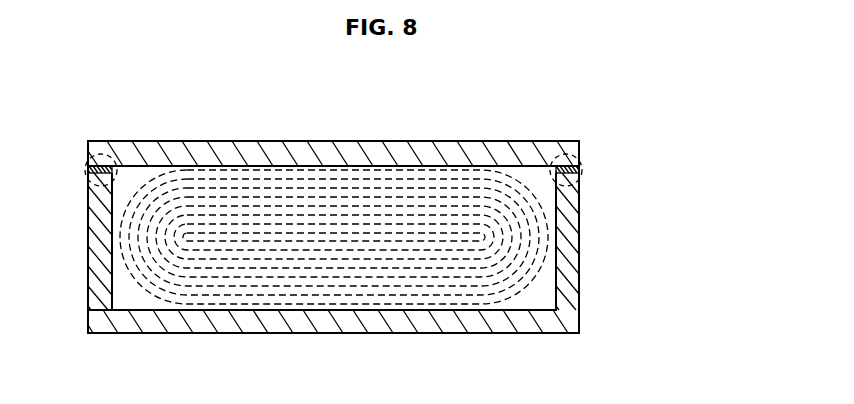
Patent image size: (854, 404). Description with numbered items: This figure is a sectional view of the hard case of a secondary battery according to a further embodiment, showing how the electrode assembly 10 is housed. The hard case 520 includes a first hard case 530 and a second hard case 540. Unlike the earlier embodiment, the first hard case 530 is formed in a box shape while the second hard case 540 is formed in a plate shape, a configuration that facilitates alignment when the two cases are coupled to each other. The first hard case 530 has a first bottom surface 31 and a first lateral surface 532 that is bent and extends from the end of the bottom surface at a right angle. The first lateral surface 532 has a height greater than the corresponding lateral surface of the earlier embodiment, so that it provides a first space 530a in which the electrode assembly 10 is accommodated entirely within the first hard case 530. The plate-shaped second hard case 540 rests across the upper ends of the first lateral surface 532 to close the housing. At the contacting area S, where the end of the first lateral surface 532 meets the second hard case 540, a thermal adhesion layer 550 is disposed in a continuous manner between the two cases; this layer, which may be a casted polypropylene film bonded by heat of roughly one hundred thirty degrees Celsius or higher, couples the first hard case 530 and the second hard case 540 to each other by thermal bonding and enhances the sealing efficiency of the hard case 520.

The hard case 520 is at (692, 144).
The second hard case 540 is at (584, 150).
The first hard case 530 is at (584, 280).
The first lateral surface 532 is at (97, 290).
The first space 530a is at (136, 297).
The first bottom surface 31 is at (258, 326).
The thermal adhesion layer 550 is at (90, 176).
The contacting area S is at (90, 157).
The electrode assembly 10 is at (281, 178).